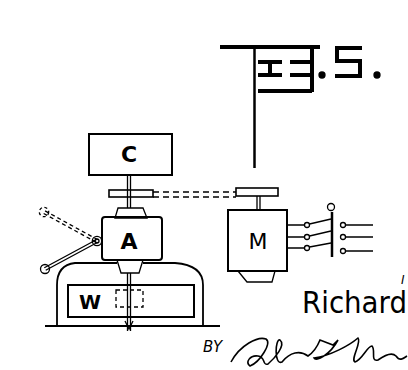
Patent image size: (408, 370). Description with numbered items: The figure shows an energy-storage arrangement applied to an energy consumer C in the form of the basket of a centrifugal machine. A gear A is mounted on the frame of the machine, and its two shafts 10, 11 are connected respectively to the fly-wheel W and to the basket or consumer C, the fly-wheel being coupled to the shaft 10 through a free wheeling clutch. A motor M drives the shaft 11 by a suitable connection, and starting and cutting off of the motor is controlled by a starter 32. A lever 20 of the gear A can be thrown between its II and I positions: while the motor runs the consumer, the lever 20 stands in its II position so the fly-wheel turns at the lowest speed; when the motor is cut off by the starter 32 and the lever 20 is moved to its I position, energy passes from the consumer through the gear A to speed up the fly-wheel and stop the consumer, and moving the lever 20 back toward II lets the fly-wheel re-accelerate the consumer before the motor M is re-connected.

The shaft 10 is at (133, 280).
The shaft 11 is at (133, 184).
The lever 20 is at (64, 257).
The starter 32 is at (317, 205).